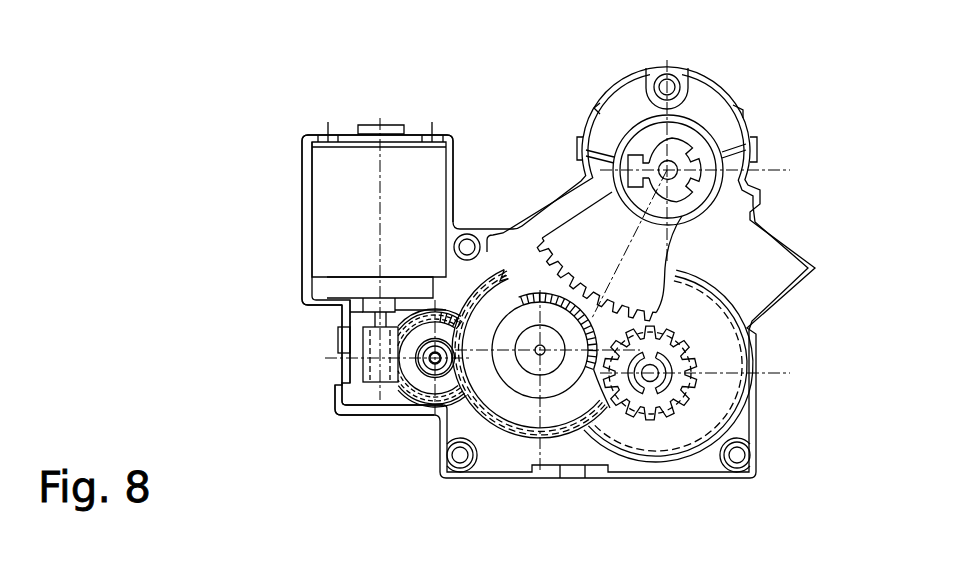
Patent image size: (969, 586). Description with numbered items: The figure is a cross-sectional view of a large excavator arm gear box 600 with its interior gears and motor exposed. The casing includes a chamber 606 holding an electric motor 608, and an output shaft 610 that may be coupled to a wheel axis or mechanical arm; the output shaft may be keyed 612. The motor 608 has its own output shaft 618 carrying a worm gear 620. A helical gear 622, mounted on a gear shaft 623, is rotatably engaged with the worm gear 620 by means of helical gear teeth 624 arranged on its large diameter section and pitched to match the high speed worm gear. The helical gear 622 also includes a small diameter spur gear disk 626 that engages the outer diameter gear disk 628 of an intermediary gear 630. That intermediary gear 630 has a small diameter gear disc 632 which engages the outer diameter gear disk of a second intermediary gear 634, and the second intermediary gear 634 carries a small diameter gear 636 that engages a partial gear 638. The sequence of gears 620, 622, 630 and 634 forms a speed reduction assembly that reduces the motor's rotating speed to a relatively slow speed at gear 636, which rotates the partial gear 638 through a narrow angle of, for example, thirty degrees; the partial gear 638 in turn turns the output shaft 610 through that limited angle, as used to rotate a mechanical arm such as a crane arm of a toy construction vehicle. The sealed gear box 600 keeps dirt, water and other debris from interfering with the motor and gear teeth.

The gear box 600 is at (757, 392).
The chamber 606 is at (328, 144).
The electric motor 608 is at (323, 200).
The output shaft 610 is at (705, 128).
The key 612 is at (660, 163).
The output shaft 618 is at (356, 316).
The worm gear 620 is at (350, 364).
The helical gear 622 is at (412, 380).
The gear shaft 623 is at (419, 362).
The helical gear teeth 624 is at (421, 380).
The small diameter spur gear disk 626 is at (437, 351).
The outer diameter gear disk 628 is at (519, 297).
The intermediary gear 630 is at (563, 436).
The small diameter gear disc 632 is at (517, 398).
The second intermediary gear 634 is at (745, 423).
The small diameter gear 636 is at (693, 365).
The partial gear 638 is at (673, 257).